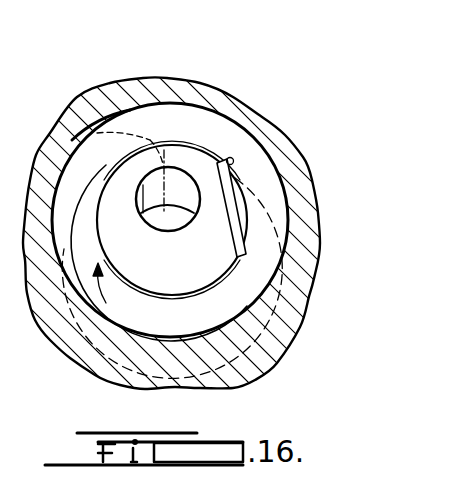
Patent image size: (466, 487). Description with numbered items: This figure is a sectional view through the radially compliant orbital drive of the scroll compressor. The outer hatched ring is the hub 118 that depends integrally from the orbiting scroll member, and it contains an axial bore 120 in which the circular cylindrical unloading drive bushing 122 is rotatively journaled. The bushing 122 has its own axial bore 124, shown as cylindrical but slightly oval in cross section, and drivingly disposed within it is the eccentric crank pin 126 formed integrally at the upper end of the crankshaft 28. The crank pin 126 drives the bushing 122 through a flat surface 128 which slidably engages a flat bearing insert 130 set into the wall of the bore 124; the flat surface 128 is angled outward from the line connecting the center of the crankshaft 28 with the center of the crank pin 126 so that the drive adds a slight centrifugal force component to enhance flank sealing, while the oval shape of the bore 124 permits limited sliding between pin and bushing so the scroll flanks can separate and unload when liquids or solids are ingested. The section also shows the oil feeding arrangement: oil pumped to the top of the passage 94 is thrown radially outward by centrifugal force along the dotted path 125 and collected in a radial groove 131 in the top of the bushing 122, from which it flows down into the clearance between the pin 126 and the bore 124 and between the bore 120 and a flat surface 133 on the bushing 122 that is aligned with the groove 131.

The hub 118 is at (73, 362).
The axial bore 120 is at (56, 191).
The unloading drive bushing 122 is at (197, 127).
The axial bore 124 is at (194, 283).
The path 125 is at (150, 135).
The eccentric crank pin 126 is at (161, 268).
The flat surface 128 is at (237, 231).
The flat bearing insert 130 is at (250, 157).
The radial groove 131 is at (157, 123).
The flat surface 133 is at (125, 113).
The passage 94 is at (140, 197).
The crankshaft 28 is at (277, 373).